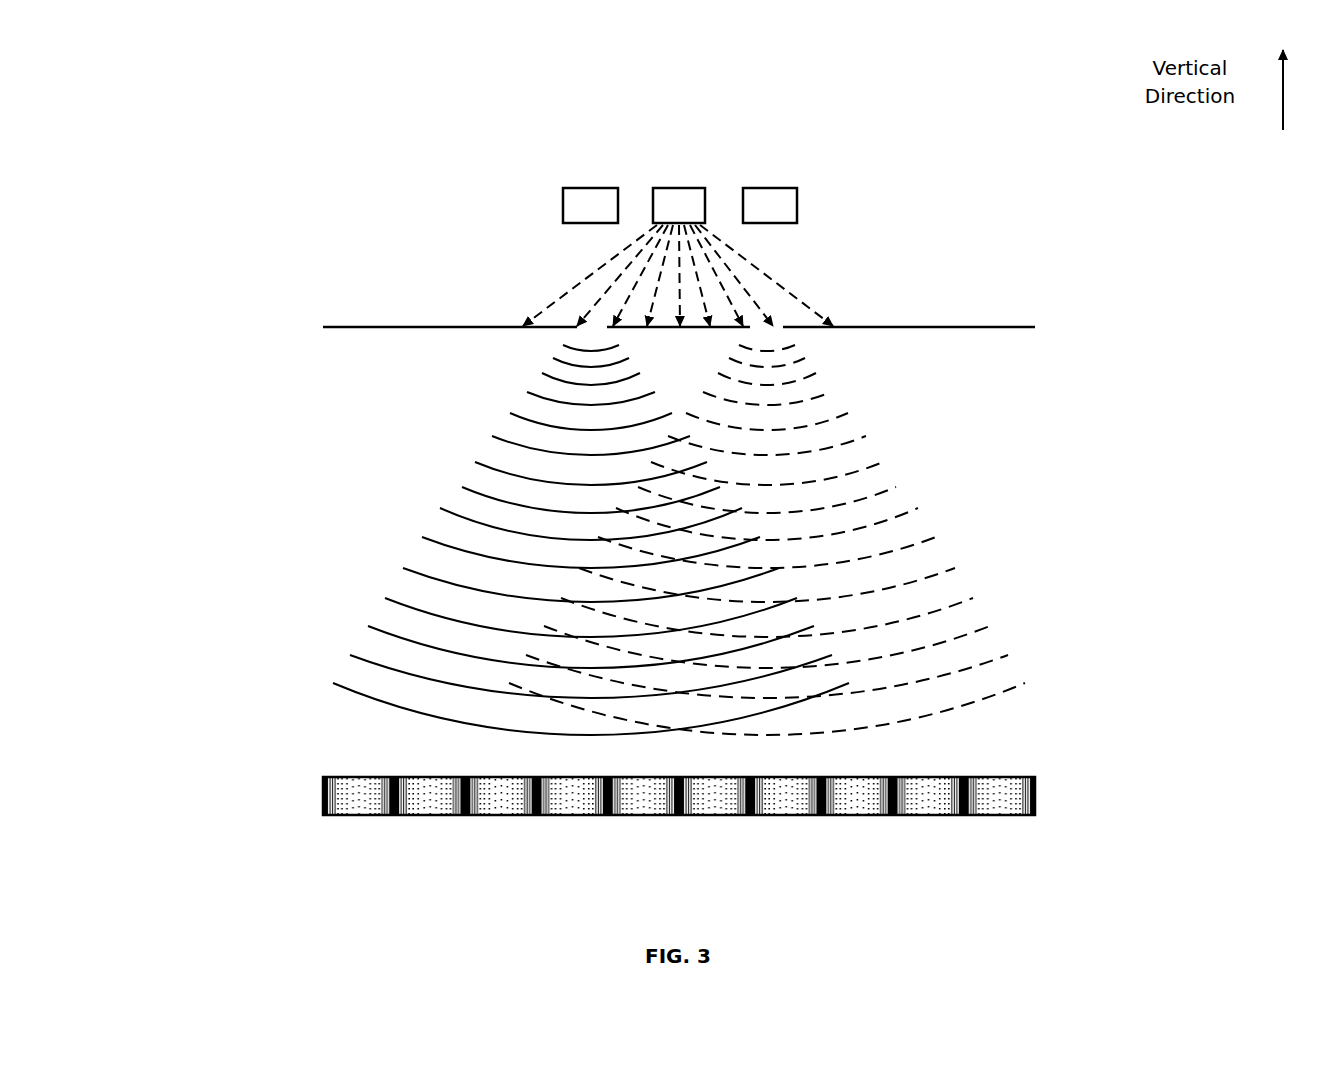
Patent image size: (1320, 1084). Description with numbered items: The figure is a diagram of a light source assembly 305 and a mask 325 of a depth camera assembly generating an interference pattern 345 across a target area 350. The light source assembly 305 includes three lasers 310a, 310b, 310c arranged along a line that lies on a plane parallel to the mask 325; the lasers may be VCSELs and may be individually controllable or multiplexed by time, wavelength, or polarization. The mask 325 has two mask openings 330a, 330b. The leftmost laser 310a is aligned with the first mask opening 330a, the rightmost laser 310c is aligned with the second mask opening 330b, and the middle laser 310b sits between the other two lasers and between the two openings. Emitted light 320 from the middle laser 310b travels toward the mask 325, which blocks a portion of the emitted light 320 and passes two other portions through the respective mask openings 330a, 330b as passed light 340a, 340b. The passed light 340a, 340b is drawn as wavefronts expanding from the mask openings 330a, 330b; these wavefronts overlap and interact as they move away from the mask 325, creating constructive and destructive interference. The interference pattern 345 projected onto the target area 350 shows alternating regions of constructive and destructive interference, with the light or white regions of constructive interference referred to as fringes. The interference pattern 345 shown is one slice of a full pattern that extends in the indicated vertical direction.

The light source assembly 305 is at (587, 181).
The laser 310a is at (565, 188).
The laser 310b is at (659, 188).
The laser 310c is at (797, 197).
The emitted light 320 is at (742, 258).
The mask 325 is at (340, 327).
The mask opening 330a is at (593, 328).
The mask opening 330b is at (765, 328).
The passed light 340a is at (457, 493).
The passed light 340b is at (890, 490).
The interference pattern 345 is at (957, 777).
The target area 350 is at (662, 768).